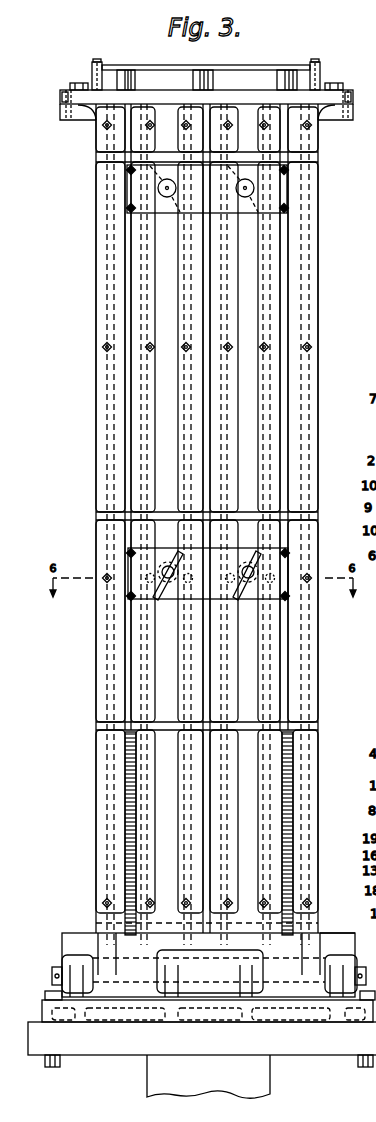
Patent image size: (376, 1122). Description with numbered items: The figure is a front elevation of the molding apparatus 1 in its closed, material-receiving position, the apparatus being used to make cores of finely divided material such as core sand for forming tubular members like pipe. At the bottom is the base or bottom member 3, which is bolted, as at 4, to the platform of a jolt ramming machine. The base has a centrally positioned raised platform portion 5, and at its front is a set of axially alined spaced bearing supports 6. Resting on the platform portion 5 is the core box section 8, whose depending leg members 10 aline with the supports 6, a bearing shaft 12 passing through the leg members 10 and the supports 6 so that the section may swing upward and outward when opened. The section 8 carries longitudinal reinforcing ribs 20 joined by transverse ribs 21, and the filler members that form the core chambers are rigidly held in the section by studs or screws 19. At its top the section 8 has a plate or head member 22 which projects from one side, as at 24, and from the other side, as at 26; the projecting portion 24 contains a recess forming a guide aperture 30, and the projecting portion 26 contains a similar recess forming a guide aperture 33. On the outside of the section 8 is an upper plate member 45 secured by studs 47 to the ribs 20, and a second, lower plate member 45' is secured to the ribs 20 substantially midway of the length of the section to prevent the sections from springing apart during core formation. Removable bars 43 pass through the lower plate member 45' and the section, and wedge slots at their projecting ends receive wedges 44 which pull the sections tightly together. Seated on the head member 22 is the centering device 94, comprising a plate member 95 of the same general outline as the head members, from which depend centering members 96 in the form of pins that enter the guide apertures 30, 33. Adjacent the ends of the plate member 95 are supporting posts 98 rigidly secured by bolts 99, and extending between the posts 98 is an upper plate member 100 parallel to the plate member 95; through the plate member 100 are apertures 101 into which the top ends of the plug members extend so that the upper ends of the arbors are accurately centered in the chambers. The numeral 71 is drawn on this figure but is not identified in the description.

The molding apparatus 1 is at (322, 473).
The base or bottom member 3 is at (42, 1013).
The bolts 4 is at (48, 1063).
The raised platform portion 5 is at (68, 933).
The bearing supports 6 is at (64, 963).
The vertical member or section 8 is at (96, 405).
The depending leg members 10 is at (312, 946).
The bearing shaft 12 is at (53, 977).
The studs or screws 19 is at (311, 346).
The longitudinal reinforcing ribs 20 is at (285, 408).
The transverse ribs 21 is at (318, 157).
The plate or head member 22 is at (180, 100).
The projecting portion 24 is at (62, 110).
The projecting portion 26 is at (350, 118).
The guide aperture 30 is at (66, 97).
The guide aperture 33 is at (350, 106).
The bars 43 is at (157, 590).
The wedges 44 is at (243, 597).
The plate member 45 is at (239, 189).
The lower plate member 45' is at (243, 568).
The studs 47 is at (288, 171).
The right block 71 is at (270, 67).
The centering device 94 is at (182, 65).
The plate member 95 is at (70, 89).
The centering members 96 is at (70, 121).
The supporting posts 98 is at (92, 75).
The bolts 99 is at (96, 59).
The upper plate member 100 is at (168, 65).
The apertures 101 is at (213, 65).